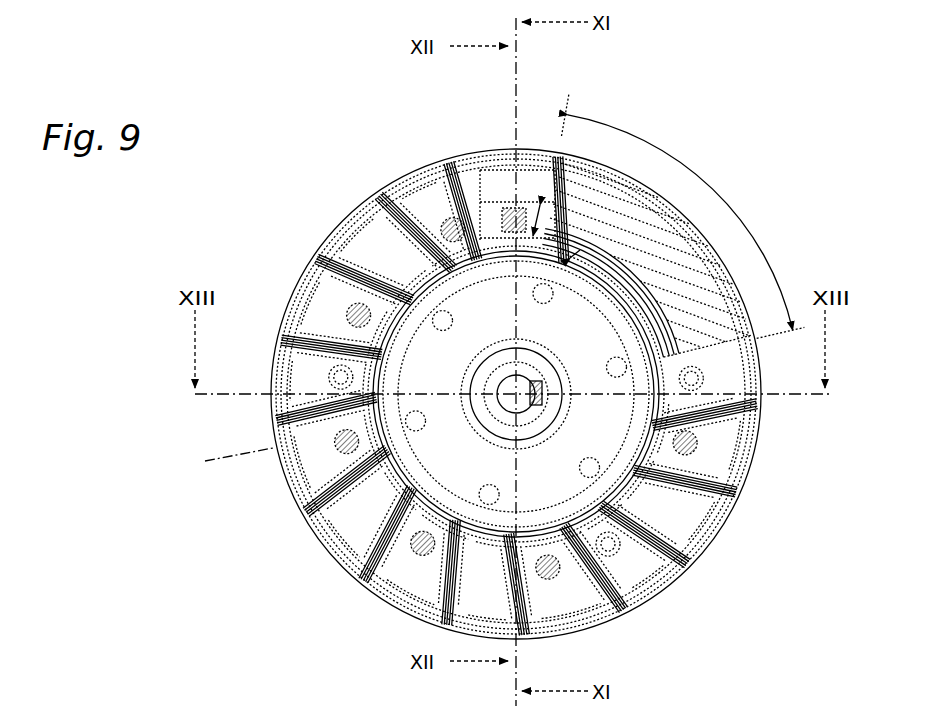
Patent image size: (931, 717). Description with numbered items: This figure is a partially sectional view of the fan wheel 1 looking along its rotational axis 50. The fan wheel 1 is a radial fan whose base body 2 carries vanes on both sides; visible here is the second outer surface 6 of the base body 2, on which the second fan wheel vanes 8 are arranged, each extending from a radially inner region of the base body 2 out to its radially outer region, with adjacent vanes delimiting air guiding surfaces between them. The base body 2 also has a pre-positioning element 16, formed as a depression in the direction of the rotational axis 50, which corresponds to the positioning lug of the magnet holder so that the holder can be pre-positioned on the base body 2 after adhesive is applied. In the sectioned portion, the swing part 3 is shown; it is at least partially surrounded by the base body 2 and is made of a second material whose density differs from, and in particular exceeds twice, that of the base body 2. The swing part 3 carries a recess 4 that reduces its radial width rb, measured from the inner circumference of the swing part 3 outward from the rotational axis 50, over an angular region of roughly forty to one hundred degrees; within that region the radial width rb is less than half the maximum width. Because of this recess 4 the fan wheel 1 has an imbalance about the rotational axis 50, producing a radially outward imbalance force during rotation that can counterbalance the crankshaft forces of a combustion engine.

The fan wheel 1 is at (258, 173).
The base body 2 is at (312, 300).
The swing part 3 is at (680, 348).
The recess 4 is at (614, 246).
The second outer surface 6 is at (373, 233).
The second fan wheel vanes 8 is at (340, 267).
The pre-positioning element 16 is at (458, 258).
The rotational axis 50 is at (514, 395).
The radial width rb is at (532, 234).